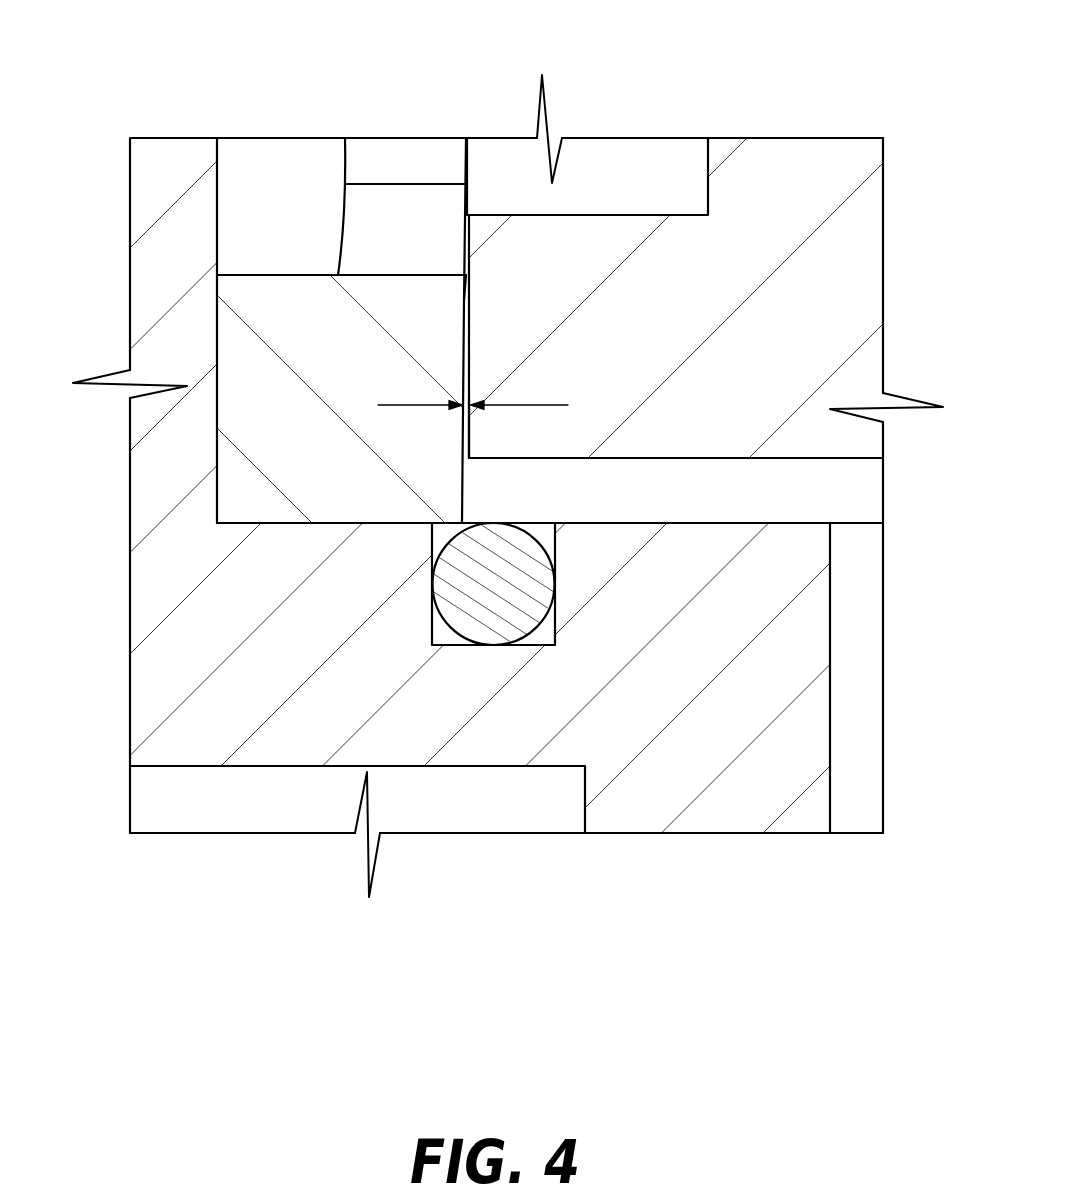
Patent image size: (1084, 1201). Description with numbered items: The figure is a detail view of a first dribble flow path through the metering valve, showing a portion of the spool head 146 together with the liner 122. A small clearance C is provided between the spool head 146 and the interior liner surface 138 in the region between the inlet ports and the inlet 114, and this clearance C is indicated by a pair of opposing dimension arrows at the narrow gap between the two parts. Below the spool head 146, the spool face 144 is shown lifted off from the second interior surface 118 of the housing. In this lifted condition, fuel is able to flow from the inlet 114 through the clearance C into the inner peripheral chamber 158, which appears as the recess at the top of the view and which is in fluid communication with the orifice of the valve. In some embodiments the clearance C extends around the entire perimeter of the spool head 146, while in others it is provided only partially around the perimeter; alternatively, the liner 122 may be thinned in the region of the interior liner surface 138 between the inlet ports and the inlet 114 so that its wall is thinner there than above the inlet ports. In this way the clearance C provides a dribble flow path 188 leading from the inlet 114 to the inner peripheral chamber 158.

The inlet 114 is at (858, 792).
The second interior surface 118 is at (747, 522).
The liner 122 is at (277, 318).
The interior liner surface 138 is at (460, 300).
The spool face 144 is at (664, 458).
The spool head 146 is at (757, 344).
The inner peripheral chamber 158 is at (635, 164).
The dribble flow path 188 is at (478, 467).
The clearance C is at (537, 404).